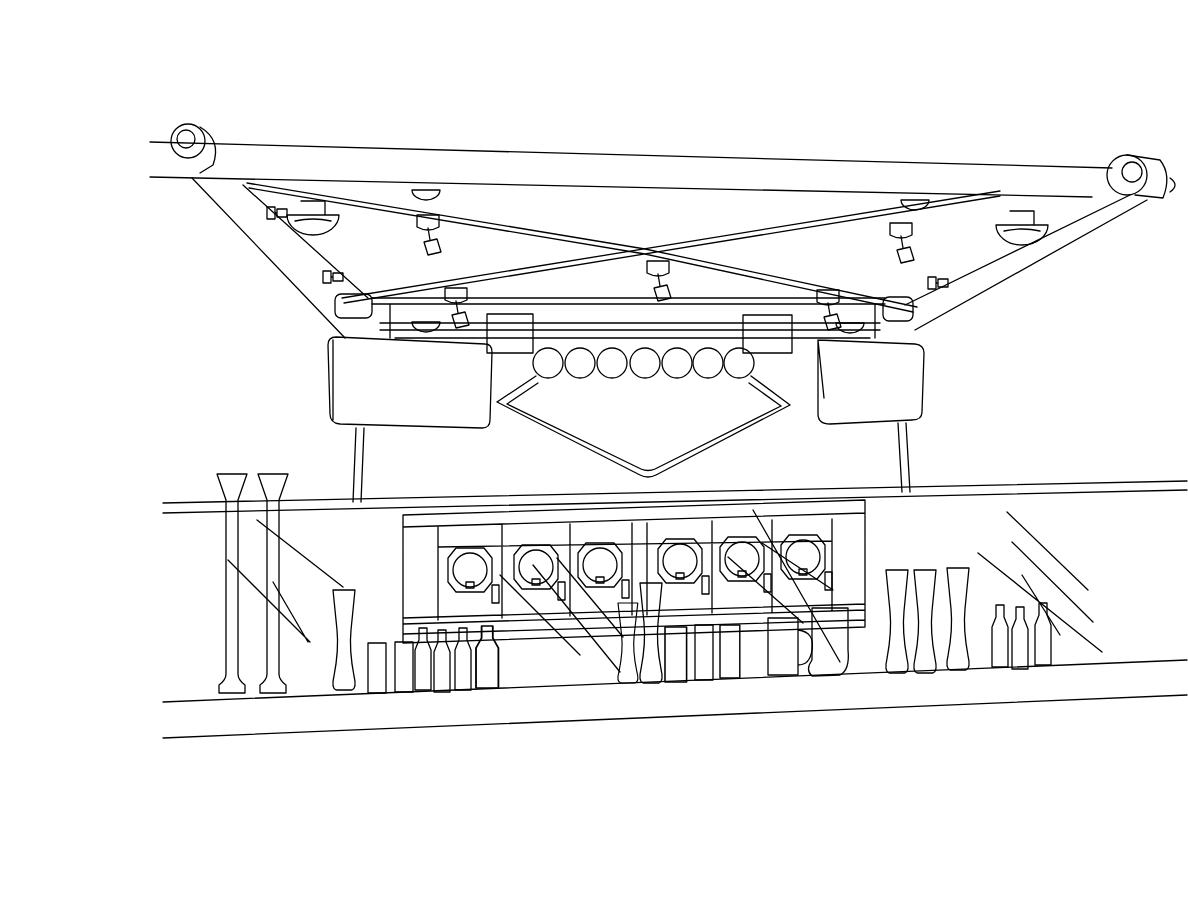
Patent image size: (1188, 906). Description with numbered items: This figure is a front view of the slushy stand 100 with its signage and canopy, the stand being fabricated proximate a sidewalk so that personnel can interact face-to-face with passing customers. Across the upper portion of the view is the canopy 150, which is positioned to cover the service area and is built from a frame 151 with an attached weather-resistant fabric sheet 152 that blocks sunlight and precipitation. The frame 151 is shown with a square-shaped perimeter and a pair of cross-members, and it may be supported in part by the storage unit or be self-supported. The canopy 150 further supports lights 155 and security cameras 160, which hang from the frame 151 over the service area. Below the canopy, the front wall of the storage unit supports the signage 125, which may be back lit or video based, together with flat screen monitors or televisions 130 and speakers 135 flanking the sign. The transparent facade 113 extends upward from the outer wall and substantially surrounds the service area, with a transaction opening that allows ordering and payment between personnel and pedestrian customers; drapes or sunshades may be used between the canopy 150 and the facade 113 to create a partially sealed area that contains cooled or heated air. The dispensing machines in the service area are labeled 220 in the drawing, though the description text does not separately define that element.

The slushy stand 100 is at (240, 290).
The transparent facade 113 is at (422, 562).
The signage 125 is at (523, 408).
The flat screen monitors/televisions 130 is at (350, 364).
The speakers 135 is at (740, 318).
The canopy 150 is at (595, 128).
The frame 151 is at (701, 170).
The weather-resistant fabric sheet 152 is at (735, 220).
The lights 155 is at (917, 243).
The security cameras 160 is at (294, 207).
The slushie dispensing bowl 220 is at (597, 567).